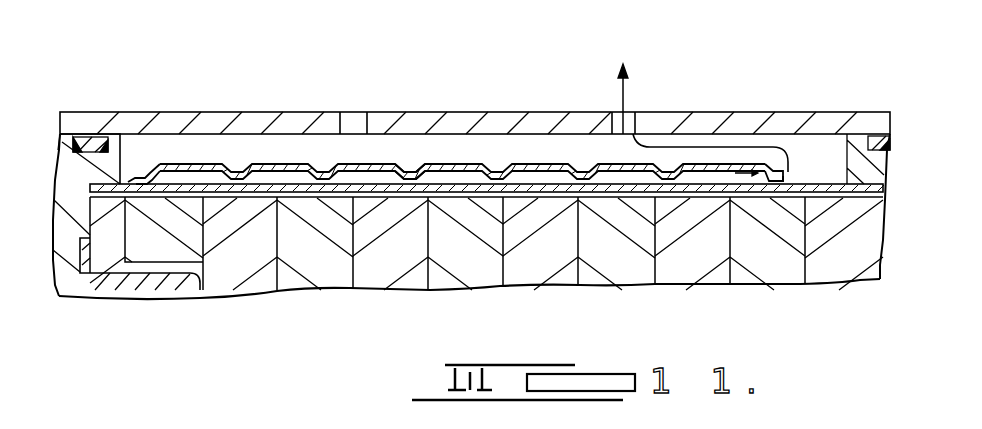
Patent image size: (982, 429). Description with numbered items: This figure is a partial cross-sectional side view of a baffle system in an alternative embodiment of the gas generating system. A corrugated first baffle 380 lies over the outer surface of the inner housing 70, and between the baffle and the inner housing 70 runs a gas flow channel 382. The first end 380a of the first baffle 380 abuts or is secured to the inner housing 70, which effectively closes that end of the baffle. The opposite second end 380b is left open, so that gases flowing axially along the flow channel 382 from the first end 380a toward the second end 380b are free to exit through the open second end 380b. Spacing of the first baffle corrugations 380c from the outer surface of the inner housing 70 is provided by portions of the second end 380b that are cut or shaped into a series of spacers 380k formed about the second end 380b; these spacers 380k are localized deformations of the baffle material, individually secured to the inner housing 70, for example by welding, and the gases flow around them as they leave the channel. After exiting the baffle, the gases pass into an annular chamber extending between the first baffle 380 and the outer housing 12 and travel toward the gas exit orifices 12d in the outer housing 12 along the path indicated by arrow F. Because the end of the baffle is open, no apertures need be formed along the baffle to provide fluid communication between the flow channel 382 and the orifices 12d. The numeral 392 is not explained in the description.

The outer housing 12 is at (136, 108).
The gas exit orifices 12d is at (350, 126).
The arrow indicating gas flow path F is at (622, 84).
The guide channel 392 is at (742, 150).
The first baffle 380 is at (715, 175).
The first end of first baffle 380a is at (146, 168).
The second end of first baffle 380b is at (790, 170).
The first baffle corrugations 380c is at (410, 165).
The spacers 380k is at (778, 183).
The gas flow channel 382 is at (378, 181).
The inner housing 70 is at (252, 206).